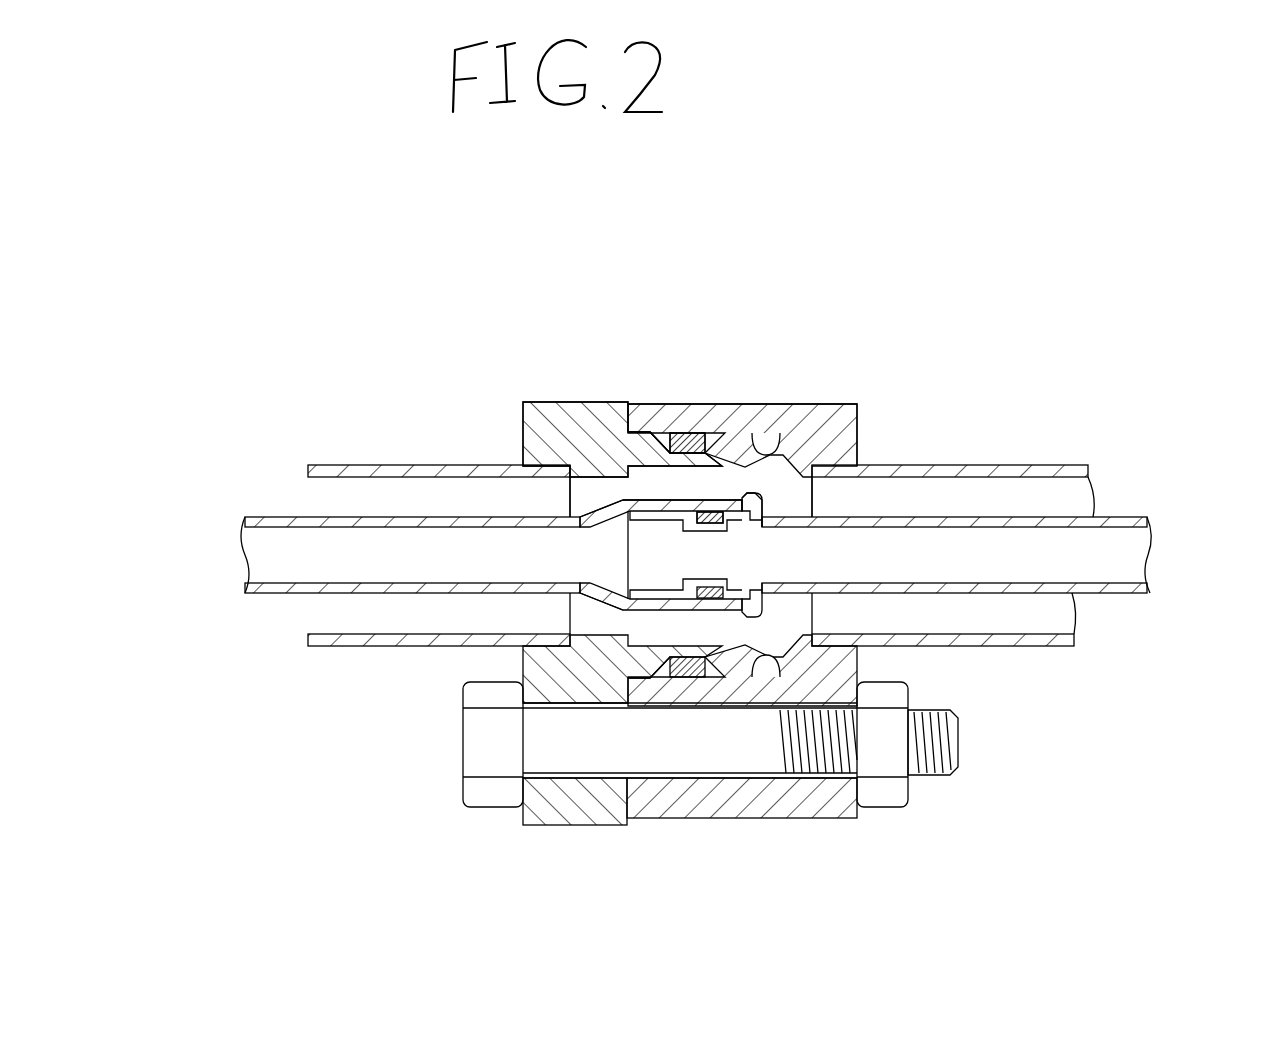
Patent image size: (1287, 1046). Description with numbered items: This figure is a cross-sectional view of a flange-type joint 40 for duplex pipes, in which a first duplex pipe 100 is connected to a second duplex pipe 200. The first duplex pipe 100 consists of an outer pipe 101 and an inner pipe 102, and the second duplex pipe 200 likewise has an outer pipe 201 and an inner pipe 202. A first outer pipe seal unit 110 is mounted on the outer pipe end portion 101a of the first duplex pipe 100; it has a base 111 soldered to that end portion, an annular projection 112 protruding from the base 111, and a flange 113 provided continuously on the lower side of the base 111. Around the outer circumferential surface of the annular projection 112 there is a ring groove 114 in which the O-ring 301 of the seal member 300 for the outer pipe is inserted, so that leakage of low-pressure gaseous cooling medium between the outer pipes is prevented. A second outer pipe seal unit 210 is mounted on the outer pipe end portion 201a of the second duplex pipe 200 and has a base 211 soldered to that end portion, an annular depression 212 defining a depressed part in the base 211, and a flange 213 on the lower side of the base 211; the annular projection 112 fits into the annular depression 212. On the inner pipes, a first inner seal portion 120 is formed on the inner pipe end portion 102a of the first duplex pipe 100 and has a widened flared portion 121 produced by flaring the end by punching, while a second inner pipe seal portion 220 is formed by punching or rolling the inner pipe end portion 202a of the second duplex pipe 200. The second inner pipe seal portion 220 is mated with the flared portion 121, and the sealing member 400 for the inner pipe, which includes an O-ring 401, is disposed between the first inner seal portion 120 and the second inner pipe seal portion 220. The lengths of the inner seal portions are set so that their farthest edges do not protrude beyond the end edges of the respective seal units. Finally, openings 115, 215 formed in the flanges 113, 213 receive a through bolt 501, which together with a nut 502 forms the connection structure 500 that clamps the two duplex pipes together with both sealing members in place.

The joint for duplex pipes 40 is at (432, 288).
The first duplex pipe 100 is at (372, 400).
The outer pipe of the first duplex pipe 101 is at (345, 465).
The outer pipe end portion 101a is at (530, 478).
The inner pipe of the first duplex pipe 102 is at (251, 517).
The inner pipe end portion 102a is at (625, 510).
The first outer pipe seal unit 110 is at (569, 398).
The base 111 is at (523, 404).
The annular projection 112 is at (767, 438).
The flange 113 is at (582, 812).
The ring groove 114 is at (650, 427).
The opening 115 is at (550, 771).
The first inner seal portion 120 is at (651, 497).
The flared portion 121 is at (625, 513).
The second duplex pipe 200 is at (1215, 401).
The outer pipe of the second duplex pipe 201 is at (1073, 472).
The outer pipe end portion 201a is at (828, 472).
The inner pipe of the second duplex pipe 202 is at (1137, 518).
The inner pipe end portion 202a is at (767, 523).
The second outer pipe seal unit 210 is at (833, 400).
The base 211 is at (860, 412).
The annular depression 212 is at (727, 582).
The flange 213 is at (768, 800).
The opening 215 is at (683, 765).
The second inner pipe seal portion 220 is at (656, 523).
The seal member for the outer pipe 300 is at (693, 340).
The O-ring 301 is at (690, 433).
The sealing member for the inner pipe 400 is at (756, 340).
The O-ring 401 is at (716, 511).
The connection structure 500 is at (1015, 876).
The through bolt 501 is at (937, 777).
The nut 502 is at (883, 795).